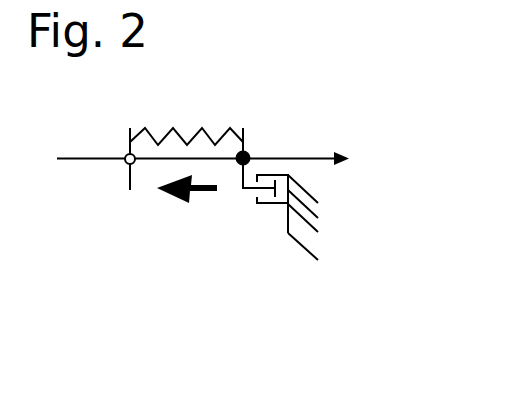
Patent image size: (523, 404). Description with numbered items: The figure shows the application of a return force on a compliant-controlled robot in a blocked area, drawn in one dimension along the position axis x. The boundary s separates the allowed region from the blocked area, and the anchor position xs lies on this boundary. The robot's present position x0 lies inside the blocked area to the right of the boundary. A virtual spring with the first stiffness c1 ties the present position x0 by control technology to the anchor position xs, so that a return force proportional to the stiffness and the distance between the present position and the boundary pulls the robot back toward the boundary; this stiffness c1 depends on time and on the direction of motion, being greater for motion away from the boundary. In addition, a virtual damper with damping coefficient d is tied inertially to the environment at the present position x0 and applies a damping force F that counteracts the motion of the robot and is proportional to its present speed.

The position x is at (212, 147).
The anchor position xs is at (116, 157).
The boundary s is at (133, 210).
The present position x0 is at (259, 157).
The first stiffness c1 is at (255, 116).
The damping coefficient d is at (312, 236).
The damping force F is at (197, 204).